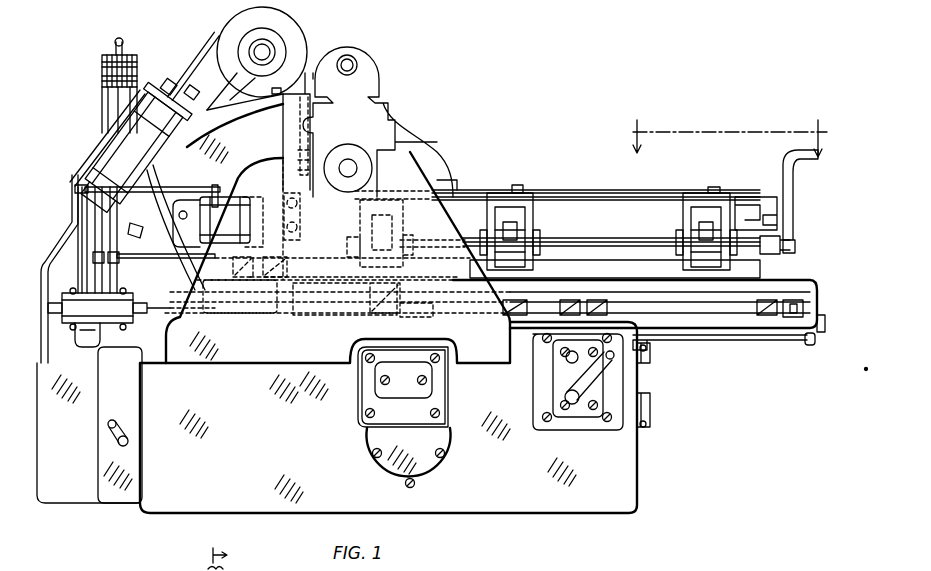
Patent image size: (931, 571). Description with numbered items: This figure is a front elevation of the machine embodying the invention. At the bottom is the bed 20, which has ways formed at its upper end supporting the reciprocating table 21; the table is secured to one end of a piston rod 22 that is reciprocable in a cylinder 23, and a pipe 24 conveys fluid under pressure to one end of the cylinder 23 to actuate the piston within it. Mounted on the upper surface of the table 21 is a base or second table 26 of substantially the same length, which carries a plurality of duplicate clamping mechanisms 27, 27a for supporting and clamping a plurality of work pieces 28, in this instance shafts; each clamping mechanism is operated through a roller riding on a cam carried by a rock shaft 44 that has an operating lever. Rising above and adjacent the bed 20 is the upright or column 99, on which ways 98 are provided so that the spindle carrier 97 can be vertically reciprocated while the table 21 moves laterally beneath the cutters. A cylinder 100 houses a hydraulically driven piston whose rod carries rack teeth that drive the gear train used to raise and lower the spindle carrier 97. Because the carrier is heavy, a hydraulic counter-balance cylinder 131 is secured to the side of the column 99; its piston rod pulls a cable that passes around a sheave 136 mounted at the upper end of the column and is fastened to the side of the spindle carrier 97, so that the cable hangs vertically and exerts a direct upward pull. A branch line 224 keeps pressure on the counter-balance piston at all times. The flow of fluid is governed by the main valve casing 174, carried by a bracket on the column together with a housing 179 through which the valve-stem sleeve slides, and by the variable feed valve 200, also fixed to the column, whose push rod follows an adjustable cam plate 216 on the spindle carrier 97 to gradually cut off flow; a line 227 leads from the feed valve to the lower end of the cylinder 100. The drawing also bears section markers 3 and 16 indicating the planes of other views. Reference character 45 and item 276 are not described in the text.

The bed 20 is at (639, 480).
The reciprocating table 21 is at (760, 284).
The piston rod 22 is at (797, 337).
The cylinder 23 is at (133, 342).
The pipe 24 is at (740, 342).
The base or second table 26 is at (597, 270).
The clamping mechanism 27 is at (692, 207).
The clamping mechanism 27a is at (527, 210).
The work pieces 28 is at (620, 176).
The rock shaft 44 is at (661, 230).
The handle 45 is at (788, 180).
The spindle carrier 97 is at (437, 165).
The ways 98 is at (318, 124).
The upright or column 99 is at (214, 110).
The cylinder 100 is at (104, 93).
The hydraulic counter-balance cylinder 131 is at (107, 140).
The sheave 136 is at (288, 32).
The main valve casing 174 is at (77, 313).
The housing 179 is at (240, 308).
The variable feed valve 200 is at (220, 197).
The adjustable cam plate 216 is at (300, 218).
The branch line 224 is at (96, 152).
The line 227 is at (213, 190).
The valve 276 is at (398, 222).
The section line 3- 3 is at (728, 130).
The section indicator 16 is at (207, 558).